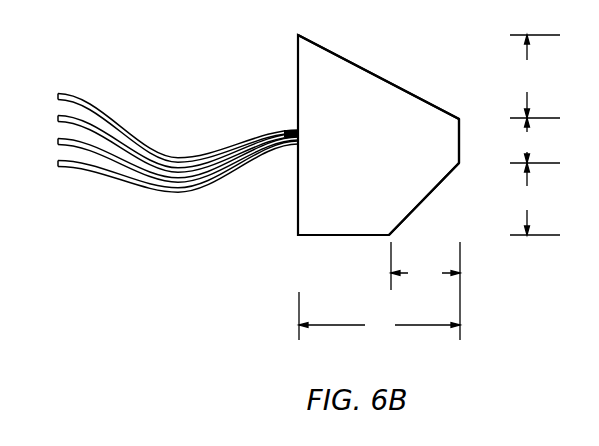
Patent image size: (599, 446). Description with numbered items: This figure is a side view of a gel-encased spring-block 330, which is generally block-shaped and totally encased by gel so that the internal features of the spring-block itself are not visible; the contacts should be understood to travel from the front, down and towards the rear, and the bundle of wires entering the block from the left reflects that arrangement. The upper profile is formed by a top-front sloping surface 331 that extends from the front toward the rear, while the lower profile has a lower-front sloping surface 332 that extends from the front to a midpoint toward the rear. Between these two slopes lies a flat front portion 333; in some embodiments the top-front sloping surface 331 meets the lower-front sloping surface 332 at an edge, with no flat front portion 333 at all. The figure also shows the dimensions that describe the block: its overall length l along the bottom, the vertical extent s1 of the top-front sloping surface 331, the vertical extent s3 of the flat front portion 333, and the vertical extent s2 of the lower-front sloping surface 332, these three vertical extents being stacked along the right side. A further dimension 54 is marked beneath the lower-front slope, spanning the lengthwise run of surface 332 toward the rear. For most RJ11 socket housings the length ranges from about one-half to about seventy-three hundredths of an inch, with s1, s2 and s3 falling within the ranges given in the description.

The gel-encased spring-block 330 is at (298, 52).
The top-front sloping surface 331 is at (376, 75).
The lower-front sloping surface 332 is at (422, 201).
The flat front portion 333 is at (460, 142).
The chamfer length dimension 54 is at (425, 291).
The vertical extent of surface 331 s1 is at (535, 76).
The vertical extent of surface 332 s2 is at (535, 199).
The vertical extent of surface 333 s3 is at (535, 140).
The length l is at (379, 316).